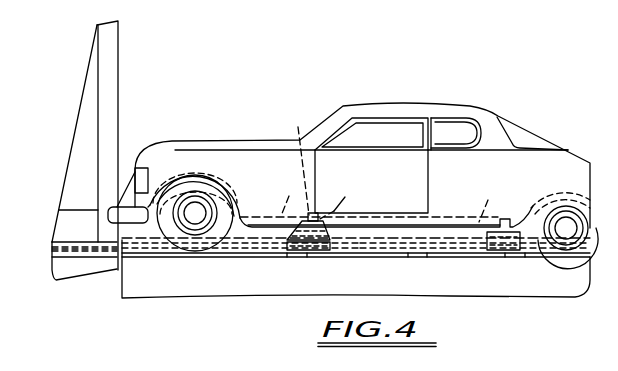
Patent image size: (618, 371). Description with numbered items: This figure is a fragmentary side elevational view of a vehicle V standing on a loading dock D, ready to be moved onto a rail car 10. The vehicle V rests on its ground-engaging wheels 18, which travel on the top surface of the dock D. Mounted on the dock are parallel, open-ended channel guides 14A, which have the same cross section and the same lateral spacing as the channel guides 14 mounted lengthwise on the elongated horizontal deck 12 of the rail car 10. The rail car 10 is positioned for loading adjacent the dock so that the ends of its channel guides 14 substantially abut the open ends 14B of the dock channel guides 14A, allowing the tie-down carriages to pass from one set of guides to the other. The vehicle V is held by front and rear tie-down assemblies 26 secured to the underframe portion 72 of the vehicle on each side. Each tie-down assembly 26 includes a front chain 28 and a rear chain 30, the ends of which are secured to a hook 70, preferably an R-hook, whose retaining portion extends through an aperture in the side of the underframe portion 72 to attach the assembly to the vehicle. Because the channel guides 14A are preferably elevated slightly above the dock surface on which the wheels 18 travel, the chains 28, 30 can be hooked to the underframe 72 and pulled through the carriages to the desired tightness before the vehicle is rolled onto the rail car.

The rail car 10 is at (129, 49).
The deck 12 is at (66, 258).
The channel guides 14 is at (84, 286).
The channel guides 14A is at (252, 237).
The open ends 14B is at (134, 250).
The ground-engaging wheels 18 is at (200, 185).
The tie-down assemblies 26 is at (318, 246).
The front chain 28 is at (274, 195).
The rear chain 30 is at (345, 199).
The hook 70 is at (297, 160).
The underframe portion 72 is at (491, 200).
The vehicle V is at (490, 116).
The loading dock D is at (578, 283).